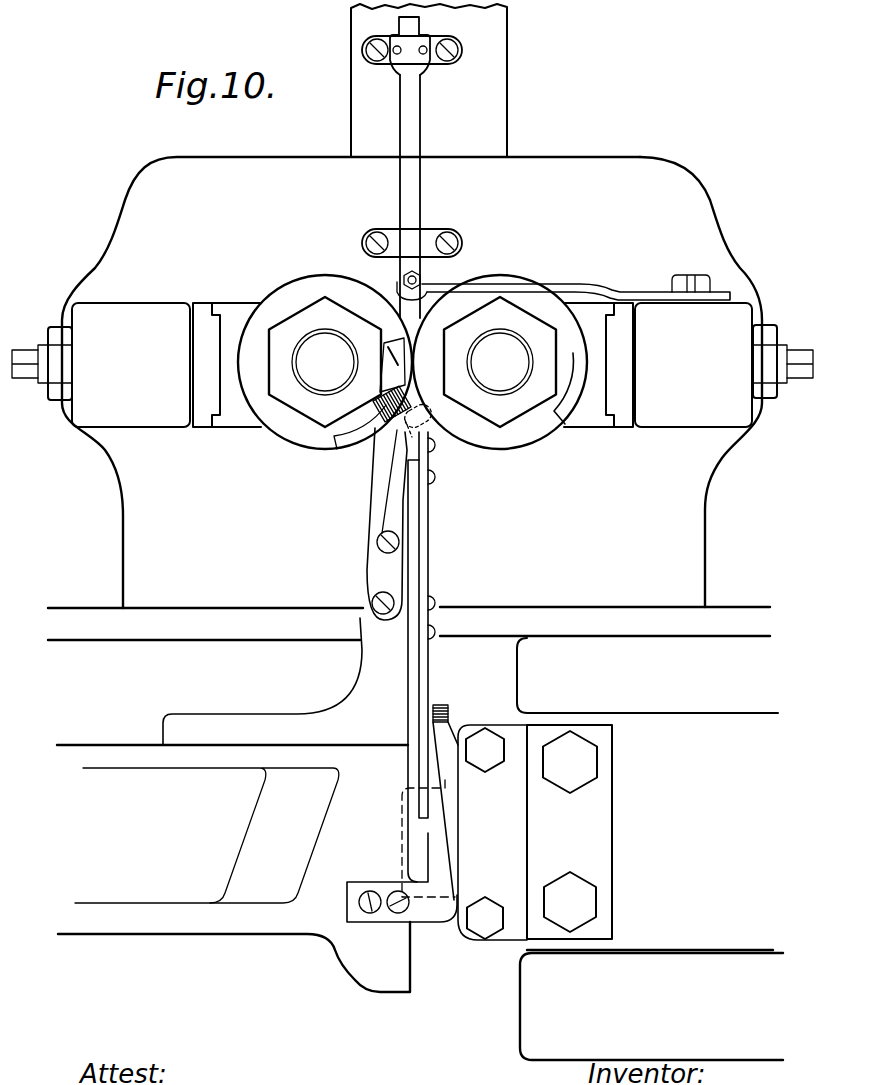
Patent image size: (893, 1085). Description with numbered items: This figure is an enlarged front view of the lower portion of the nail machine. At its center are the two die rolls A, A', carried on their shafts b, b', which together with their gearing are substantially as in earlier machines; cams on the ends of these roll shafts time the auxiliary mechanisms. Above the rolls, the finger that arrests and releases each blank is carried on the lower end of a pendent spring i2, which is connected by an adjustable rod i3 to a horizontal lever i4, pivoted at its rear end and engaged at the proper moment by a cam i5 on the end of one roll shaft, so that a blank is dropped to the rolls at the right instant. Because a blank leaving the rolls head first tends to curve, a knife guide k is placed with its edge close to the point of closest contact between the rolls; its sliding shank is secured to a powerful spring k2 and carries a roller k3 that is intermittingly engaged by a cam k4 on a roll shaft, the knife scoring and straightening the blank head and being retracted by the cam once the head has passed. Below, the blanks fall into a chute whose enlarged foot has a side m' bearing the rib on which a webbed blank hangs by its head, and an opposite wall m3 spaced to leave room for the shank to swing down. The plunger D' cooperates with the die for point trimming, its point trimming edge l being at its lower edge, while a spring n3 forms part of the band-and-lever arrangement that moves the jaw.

The die roll A is at (325, 362).
The die roll A' is at (500, 362).
The roll shaft b is at (325, 362).
The roll shaft b' is at (500, 362).
The pendent spring i2 is at (405, 220).
The adjustable rod i3 is at (405, 276).
The horizontal lever i4 is at (458, 292).
The cam i5 is at (558, 417).
The knife guide k is at (403, 432).
The spring k2 is at (393, 502).
The roller k3 is at (372, 445).
The cam k4 is at (396, 350).
The side of chute m' is at (401, 671).
The wall of chute m3 is at (427, 697).
The spring n3 is at (450, 728).
The plunger D' is at (480, 831).
The point trimming edge l is at (396, 898).